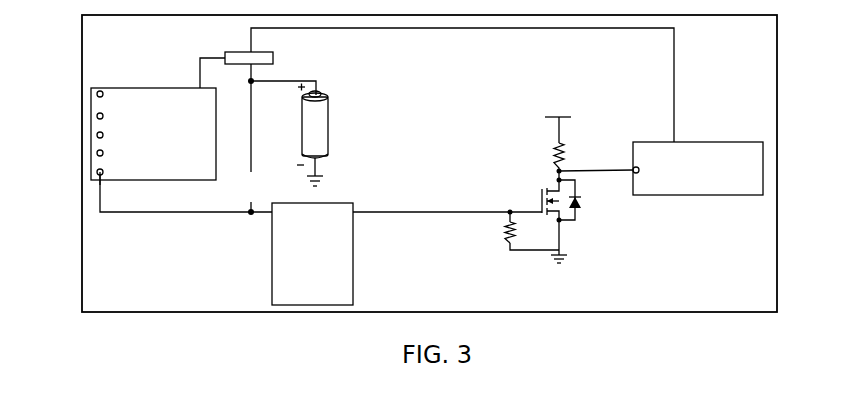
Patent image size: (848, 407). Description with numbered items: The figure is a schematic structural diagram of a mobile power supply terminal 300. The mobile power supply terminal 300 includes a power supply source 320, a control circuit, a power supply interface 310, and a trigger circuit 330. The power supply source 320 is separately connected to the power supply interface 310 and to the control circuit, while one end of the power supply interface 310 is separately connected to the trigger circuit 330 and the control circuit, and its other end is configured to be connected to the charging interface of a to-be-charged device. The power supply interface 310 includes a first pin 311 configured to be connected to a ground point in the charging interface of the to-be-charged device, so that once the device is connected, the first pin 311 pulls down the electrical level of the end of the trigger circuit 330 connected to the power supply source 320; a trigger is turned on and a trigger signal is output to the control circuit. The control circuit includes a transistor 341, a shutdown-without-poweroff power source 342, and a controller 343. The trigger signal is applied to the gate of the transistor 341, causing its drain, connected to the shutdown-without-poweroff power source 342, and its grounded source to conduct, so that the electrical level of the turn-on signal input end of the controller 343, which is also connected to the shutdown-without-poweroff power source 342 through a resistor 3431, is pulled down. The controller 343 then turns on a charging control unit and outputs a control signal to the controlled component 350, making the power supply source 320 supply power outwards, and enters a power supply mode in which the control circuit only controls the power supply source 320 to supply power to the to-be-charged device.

The mobile power supply terminal 300 is at (777, 208).
The power supply interface 310 is at (130, 88).
The first pin 311 is at (100, 170).
The power supply source 320 is at (332, 135).
The trigger circuit 330 is at (368, 203).
The transistor 341 is at (542, 196).
The shutdown-without-poweroff power source 342 is at (568, 117).
The controller 343 is at (698, 142).
The resistor 3431 is at (634, 167).
The controlled component 350 is at (274, 60).